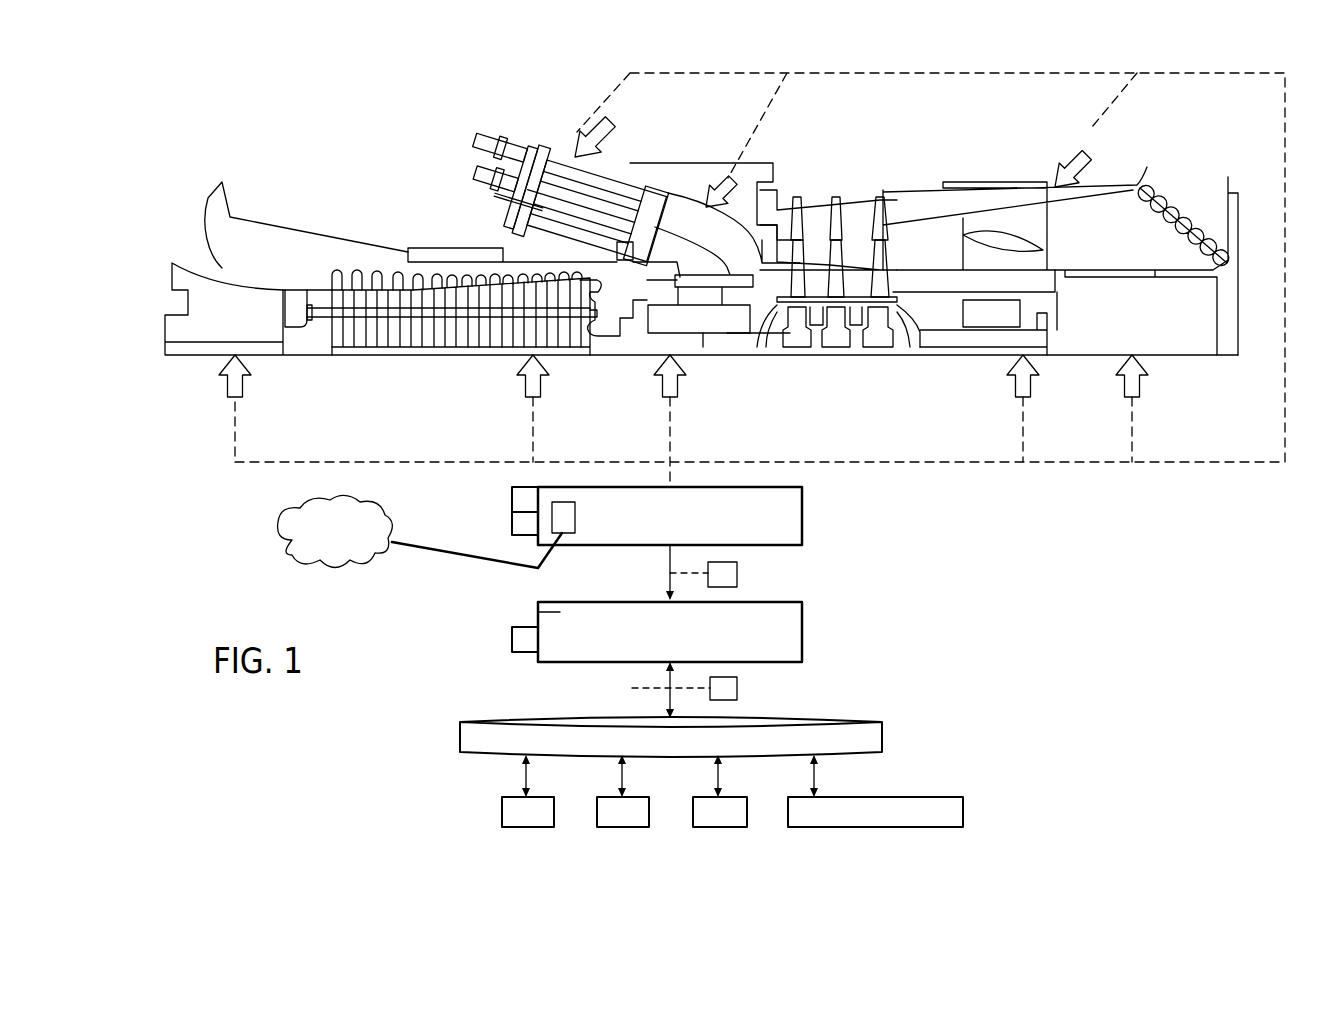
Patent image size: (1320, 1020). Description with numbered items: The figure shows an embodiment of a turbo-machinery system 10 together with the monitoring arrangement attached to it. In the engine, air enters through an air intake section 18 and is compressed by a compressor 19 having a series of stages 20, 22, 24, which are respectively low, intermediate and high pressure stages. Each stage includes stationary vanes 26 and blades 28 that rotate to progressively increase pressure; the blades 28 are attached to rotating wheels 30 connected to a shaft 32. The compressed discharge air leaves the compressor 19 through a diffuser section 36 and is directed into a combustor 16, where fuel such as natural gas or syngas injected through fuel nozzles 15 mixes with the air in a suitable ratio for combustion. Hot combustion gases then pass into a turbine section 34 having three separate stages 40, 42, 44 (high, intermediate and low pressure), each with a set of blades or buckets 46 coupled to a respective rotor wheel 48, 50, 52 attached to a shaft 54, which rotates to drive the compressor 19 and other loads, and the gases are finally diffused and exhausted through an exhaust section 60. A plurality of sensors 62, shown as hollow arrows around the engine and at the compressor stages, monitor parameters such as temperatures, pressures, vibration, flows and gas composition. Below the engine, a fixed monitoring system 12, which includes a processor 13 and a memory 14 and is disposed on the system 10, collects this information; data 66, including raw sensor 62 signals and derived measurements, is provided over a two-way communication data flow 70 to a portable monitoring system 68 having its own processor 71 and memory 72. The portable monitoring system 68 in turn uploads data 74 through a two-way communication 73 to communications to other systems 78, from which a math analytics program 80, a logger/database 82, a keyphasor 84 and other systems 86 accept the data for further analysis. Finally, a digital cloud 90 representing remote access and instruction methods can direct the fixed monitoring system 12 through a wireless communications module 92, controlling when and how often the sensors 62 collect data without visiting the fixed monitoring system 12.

The turbo-machinery system 10 is at (663, 115).
The fixed monitoring system 12 is at (802, 518).
The processor 13 is at (512, 500).
The memory 14 is at (512, 525).
The fuel nozzle 15 is at (568, 188).
The combustor 16 is at (443, 155).
The air intake section 18 is at (218, 268).
The compressor 19 is at (542, 245).
The low pressure stage 20 is at (450, 365).
The intermediate pressure stage 22 is at (510, 365).
The high pressure stage 24 is at (558, 365).
The stationary vanes 26 is at (358, 273).
The blades 28 is at (334, 282).
The rotating wheels 30 is at (337, 333).
The shaft 32 is at (357, 312).
The turbine section 34 is at (870, 150).
The diffuser section 36 is at (670, 268).
The high pressure stage 40 is at (772, 365).
The intermediate pressure stage 42 is at (858, 366).
The low pressure stage 44 is at (903, 366).
The blades or buckets 46 is at (838, 240).
The rotor wheel 48 is at (790, 335).
The rotor wheel 50 is at (840, 335).
The rotor wheel 52 is at (882, 333).
The shaft 54 is at (728, 340).
The exhaust section 60 is at (871, 150).
The sensors 62 is at (607, 147).
The data 66 is at (737, 578).
The portable monitoring system 68 is at (802, 635).
The two-way communication data flow 70 is at (670, 560).
The processor 71 is at (512, 613).
The memory 72 is at (512, 640).
The two-way communication 73 is at (672, 680).
The data 74 is at (737, 692).
The communications to other systems 78 is at (460, 725).
The math analytics program 80 is at (502, 812).
The logger/database 82 is at (612, 797).
The keyphasor 84 is at (707, 797).
The other systems 86 is at (963, 808).
The digital cloud 90 is at (277, 522).
The wireless communications module 92 is at (575, 520).